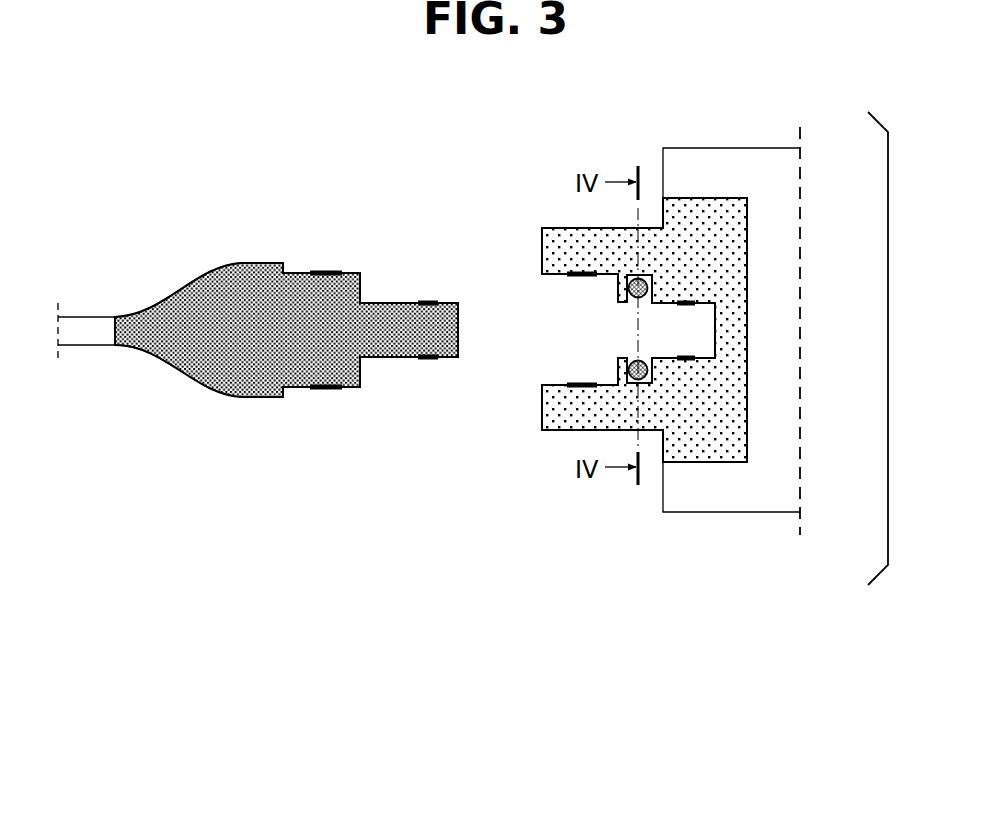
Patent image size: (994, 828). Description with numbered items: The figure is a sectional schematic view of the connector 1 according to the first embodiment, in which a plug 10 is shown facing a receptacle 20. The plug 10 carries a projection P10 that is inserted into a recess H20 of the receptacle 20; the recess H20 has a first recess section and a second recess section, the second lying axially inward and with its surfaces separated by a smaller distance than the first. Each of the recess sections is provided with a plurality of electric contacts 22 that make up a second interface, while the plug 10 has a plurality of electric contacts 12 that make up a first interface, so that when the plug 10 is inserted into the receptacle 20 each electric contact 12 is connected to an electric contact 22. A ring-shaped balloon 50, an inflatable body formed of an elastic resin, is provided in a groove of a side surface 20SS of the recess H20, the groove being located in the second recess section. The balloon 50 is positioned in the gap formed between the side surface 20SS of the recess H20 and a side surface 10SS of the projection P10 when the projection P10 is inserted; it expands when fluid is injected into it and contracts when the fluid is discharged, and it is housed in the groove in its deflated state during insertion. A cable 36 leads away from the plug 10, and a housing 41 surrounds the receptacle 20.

The connector 1 is at (152, 170).
The plug 10 is at (238, 263).
The electric contacts 12 is at (429, 300).
The cable 36 is at (93, 316).
The projection P10 is at (353, 405).
The side surface 10SS is at (378, 364).
The receptacle 20 is at (560, 227).
The electric contacts 22 is at (593, 277).
The recess H20 is at (549, 310).
The side surface 20SS is at (554, 381).
The balloon 50 is at (633, 384).
The housing / panel 41 is at (720, 148).